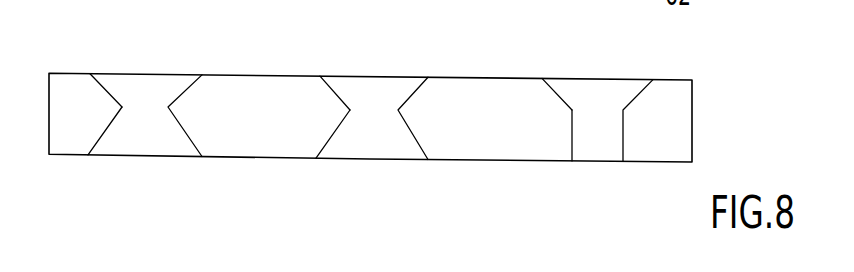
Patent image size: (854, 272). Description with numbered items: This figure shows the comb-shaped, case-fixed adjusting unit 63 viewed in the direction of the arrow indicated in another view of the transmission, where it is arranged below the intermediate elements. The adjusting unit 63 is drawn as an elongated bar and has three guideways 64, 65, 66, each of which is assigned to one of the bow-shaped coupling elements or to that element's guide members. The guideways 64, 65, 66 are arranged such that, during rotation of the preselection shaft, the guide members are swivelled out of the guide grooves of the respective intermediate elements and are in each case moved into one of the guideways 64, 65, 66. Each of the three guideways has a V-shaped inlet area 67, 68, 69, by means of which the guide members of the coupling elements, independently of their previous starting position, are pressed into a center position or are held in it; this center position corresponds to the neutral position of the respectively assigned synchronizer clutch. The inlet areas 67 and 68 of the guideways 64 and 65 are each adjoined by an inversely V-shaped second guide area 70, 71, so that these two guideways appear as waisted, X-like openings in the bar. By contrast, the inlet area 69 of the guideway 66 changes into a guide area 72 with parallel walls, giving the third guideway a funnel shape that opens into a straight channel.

The adjusting unit 63 is at (700, 118).
The guideway 64 is at (157, 165).
The guideway 65 is at (382, 165).
The guideway 66 is at (607, 168).
The V-shaped inlet area 67 is at (100, 78).
The V-shaped inlet area 68 is at (333, 83).
The V-shaped inlet area 69 is at (550, 82).
The second guide area 70 is at (100, 143).
The second guide area 71 is at (327, 145).
The guide area 72 is at (573, 140).